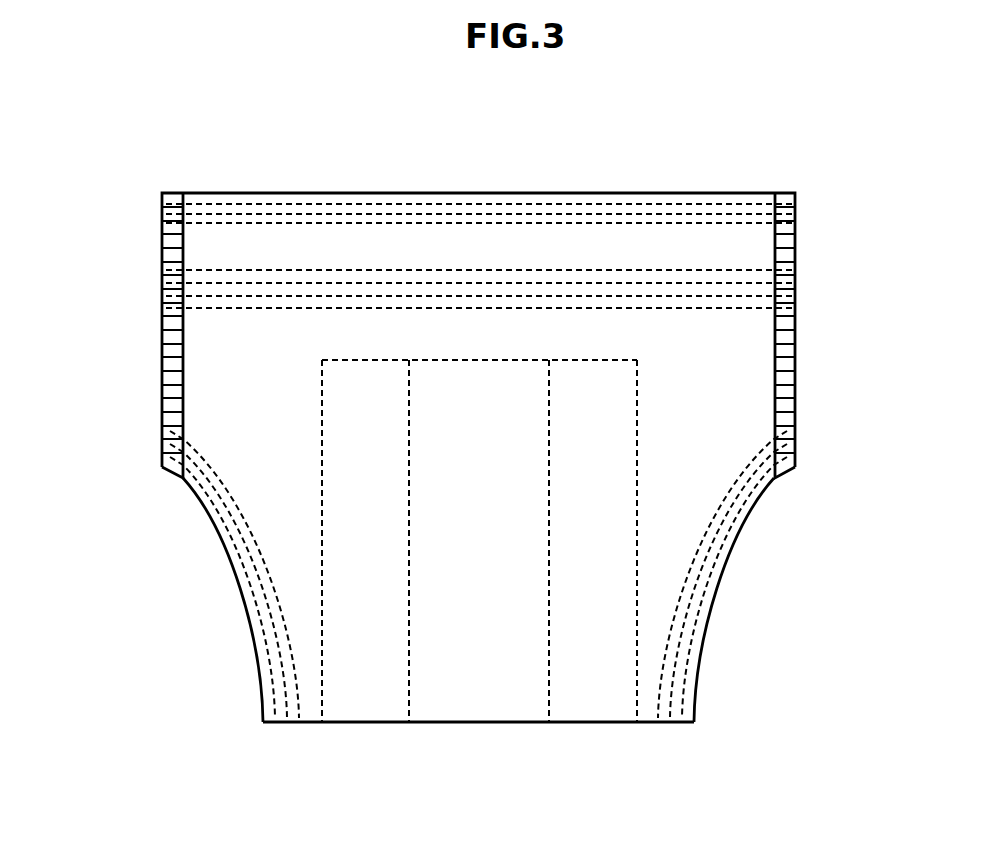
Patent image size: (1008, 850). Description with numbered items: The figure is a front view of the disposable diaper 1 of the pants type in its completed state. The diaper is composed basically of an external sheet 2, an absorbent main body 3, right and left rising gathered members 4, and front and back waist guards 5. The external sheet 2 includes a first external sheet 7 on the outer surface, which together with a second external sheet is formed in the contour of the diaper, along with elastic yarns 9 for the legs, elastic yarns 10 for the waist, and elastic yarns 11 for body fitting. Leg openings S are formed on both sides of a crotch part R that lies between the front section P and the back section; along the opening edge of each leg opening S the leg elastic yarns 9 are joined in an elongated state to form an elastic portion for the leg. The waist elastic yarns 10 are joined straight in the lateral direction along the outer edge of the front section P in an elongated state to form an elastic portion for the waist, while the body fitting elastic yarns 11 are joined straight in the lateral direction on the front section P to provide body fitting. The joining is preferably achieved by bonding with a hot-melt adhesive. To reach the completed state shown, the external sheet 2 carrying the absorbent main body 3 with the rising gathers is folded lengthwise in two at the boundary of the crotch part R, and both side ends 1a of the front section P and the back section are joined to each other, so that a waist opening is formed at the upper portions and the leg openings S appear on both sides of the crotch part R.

The disposable diaper of the pants type 1 is at (836, 174).
The side ends 1a is at (162, 256).
The external sheet 2 is at (757, 527).
The absorbent main body 3 is at (497, 712).
The rising gathered members 4 is at (362, 672).
The waist guards 5 is at (732, 375).
The first external sheet 7 is at (653, 607).
The elastic yarns for legs 9 is at (250, 556).
The elastic yarns for a waist 10 is at (468, 212).
The elastic yarns for body fitting 11 is at (227, 286).
The front section P is at (733, 290).
The crotch part R is at (380, 722).
The leg openings S is at (252, 620).